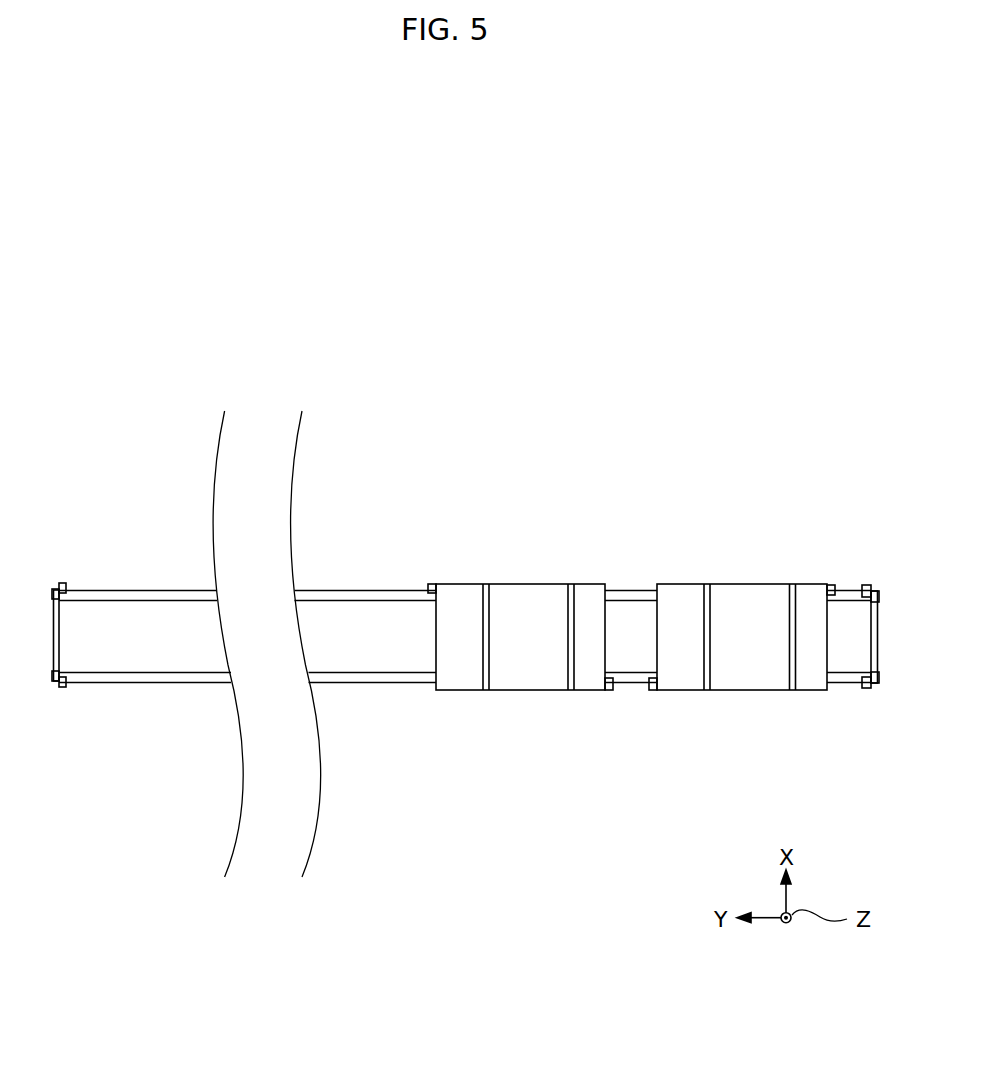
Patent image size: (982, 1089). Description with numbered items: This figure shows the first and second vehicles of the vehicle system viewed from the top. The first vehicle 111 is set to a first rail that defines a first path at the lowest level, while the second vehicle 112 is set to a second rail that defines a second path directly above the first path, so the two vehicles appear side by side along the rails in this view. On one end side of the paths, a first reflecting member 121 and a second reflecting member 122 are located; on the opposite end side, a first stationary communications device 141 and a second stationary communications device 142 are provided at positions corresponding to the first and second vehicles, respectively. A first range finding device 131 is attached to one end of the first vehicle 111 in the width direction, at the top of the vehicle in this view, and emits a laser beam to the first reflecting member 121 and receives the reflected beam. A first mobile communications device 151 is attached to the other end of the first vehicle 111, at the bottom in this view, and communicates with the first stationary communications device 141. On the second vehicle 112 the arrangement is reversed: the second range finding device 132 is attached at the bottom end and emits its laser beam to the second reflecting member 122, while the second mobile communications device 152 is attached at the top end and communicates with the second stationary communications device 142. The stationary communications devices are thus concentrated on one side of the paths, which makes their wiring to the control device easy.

The first vehicle 111 is at (547, 651).
The second vehicle 112 is at (767, 651).
The first reflecting member 121 is at (62, 582).
The second reflecting member 122 is at (62, 688).
The first range finding device 131 is at (428, 584).
The second range finding device 132 is at (652, 690).
The first stationary communications device 141 is at (866, 690).
The second stationary communications device 142 is at (866, 583).
The first mobile communications device 151 is at (609, 690).
The second mobile communications device 152 is at (831, 583).